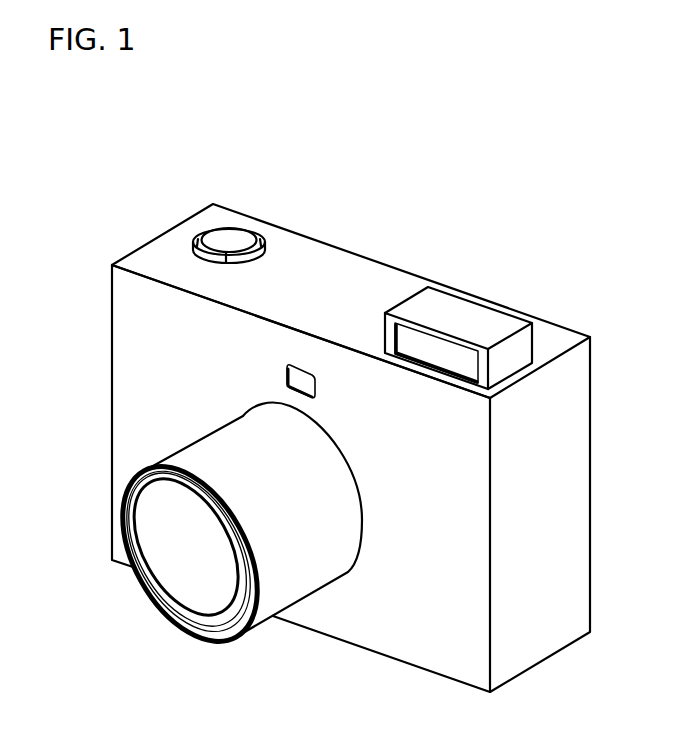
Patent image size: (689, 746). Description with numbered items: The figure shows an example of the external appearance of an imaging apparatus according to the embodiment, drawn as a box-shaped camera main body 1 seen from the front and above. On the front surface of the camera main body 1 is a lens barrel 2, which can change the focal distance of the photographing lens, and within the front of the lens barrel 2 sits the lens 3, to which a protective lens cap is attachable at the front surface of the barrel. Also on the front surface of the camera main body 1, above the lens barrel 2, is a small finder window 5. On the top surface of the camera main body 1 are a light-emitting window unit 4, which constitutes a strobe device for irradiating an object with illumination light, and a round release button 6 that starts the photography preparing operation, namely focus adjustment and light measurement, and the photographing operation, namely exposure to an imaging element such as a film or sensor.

The camera main body 1 is at (131, 411).
The lens barrel 2 is at (299, 575).
The lens 3 is at (187, 565).
The light-emitting window unit 4 is at (451, 355).
The finder window 5 is at (305, 382).
The release button 6 is at (229, 236).